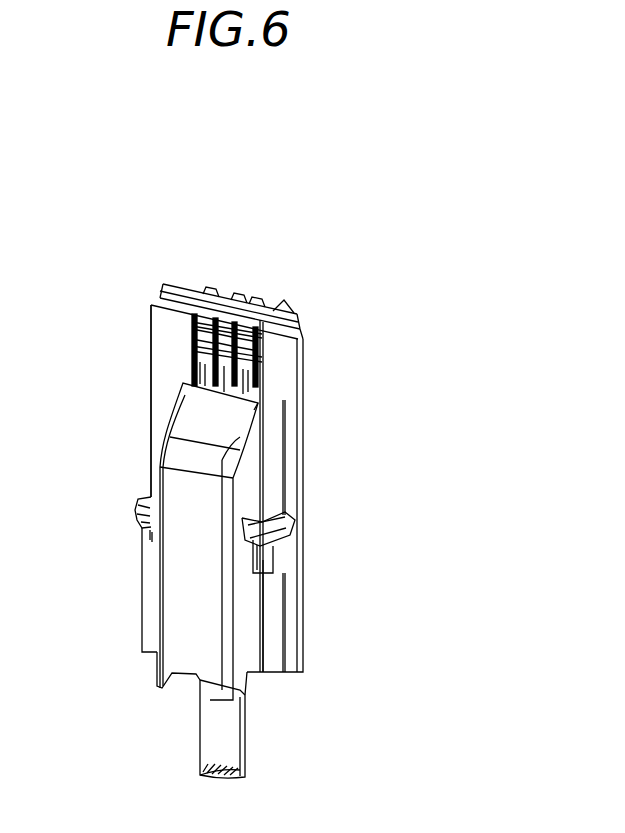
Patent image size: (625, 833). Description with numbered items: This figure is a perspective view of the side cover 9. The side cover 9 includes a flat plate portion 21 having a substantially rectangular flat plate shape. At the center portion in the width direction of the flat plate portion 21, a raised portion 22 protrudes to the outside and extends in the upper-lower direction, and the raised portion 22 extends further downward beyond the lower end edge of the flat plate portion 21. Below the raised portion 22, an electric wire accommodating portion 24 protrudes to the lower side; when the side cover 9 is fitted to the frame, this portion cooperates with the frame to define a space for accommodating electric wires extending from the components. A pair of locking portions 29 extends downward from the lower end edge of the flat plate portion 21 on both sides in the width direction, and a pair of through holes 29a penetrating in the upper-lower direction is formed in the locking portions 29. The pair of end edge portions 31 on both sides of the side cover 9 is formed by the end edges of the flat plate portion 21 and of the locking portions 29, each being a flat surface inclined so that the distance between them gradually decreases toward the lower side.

The side cover 9 is at (266, 253).
The flat plate portion 21 is at (171, 345).
The raised portion 22 is at (205, 510).
The electric wire accommodating portion 24 is at (232, 752).
The locking portions 29 is at (150, 603).
The through holes 29a is at (150, 500).
The end edge portions 31 is at (160, 409).